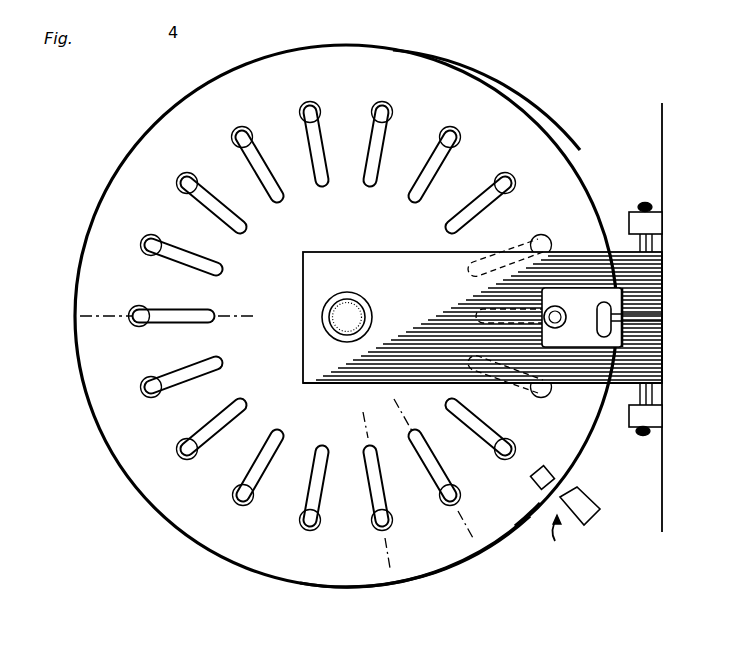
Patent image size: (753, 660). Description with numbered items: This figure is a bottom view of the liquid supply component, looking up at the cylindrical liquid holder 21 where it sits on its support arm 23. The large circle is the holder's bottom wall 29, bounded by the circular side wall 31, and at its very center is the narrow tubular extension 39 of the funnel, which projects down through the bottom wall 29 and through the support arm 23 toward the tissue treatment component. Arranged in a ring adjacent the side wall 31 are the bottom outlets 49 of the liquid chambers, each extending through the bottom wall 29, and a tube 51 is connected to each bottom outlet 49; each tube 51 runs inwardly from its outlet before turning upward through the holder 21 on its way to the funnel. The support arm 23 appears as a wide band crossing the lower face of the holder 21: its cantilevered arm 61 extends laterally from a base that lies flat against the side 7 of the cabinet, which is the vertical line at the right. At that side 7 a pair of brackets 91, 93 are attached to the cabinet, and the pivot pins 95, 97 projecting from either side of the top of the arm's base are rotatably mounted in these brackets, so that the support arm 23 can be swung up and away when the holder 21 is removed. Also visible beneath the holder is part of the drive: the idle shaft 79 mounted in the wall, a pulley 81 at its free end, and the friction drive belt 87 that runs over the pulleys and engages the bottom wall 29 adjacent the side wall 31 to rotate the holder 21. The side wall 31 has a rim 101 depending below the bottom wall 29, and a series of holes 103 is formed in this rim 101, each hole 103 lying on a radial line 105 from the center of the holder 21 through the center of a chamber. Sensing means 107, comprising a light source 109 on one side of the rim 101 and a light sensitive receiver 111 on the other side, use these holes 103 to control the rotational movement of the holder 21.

The side of the cabinet 7 is at (662, 128).
The liquid holder 21 is at (153, 120).
The support arm 23 is at (399, 249).
The bottom wall 29 is at (212, 131).
The circular side wall 31 is at (532, 102).
The tubular extension 39 is at (369, 304).
The bottom outlet 49 is at (313, 103).
The tube 51 is at (393, 124).
The cantilevered arm 61 is at (380, 385).
The idle shaft 79 is at (612, 330).
The pulleys 81 is at (628, 316).
The friction drive belt 87 is at (628, 346).
The bracket 91 is at (660, 427).
The bracket 93 is at (632, 211).
The pivot pin 95 is at (643, 437).
The pivot pin 97 is at (645, 201).
The rim 101 is at (527, 521).
The holes 103 is at (78, 317).
The radial line 105 is at (105, 317).
The sensing means 107 is at (573, 532).
The light source 109 is at (566, 440).
The light sensitive receiver 111 is at (580, 492).